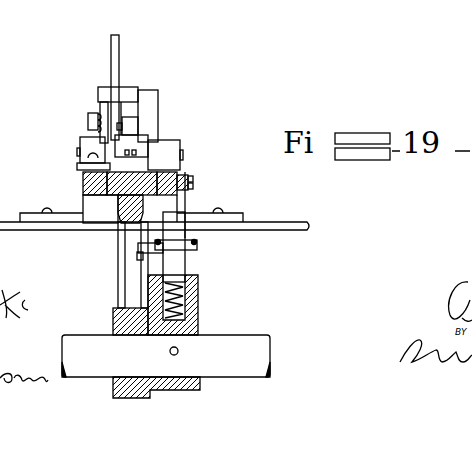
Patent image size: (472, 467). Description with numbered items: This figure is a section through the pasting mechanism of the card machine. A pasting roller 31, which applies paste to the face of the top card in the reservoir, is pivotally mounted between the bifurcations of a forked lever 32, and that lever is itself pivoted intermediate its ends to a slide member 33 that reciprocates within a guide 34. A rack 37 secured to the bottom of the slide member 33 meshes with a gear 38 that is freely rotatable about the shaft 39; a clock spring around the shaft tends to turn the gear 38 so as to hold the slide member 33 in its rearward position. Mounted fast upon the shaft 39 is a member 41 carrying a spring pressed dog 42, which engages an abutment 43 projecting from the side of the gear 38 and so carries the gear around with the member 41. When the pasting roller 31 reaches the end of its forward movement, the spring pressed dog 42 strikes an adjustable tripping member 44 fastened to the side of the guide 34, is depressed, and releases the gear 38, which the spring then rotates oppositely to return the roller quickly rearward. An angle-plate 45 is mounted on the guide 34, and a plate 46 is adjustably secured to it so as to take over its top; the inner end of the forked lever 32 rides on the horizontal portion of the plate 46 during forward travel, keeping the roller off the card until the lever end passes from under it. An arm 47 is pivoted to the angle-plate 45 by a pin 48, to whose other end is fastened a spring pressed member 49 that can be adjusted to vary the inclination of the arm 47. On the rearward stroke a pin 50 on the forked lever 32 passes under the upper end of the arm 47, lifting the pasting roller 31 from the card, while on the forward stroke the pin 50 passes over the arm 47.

The pasting roller 31 is at (150, 97).
The forked lever 32 is at (138, 126).
The slide member 33 is at (140, 163).
The guide 34 is at (80, 181).
The rack 37 is at (117, 198).
The gear 38 is at (117, 321).
The shaft 39 is at (245, 343).
The member 41 is at (183, 305).
The spring pressed dog 42 is at (177, 258).
The abutment 43 is at (137, 260).
The adjustable tripping member 44 is at (186, 181).
The angle-plate 45 is at (87, 146).
The plate 46 is at (107, 94).
The arm 47 is at (117, 53).
The pin 48 is at (91, 116).
The spring pressed member 49 is at (90, 125).
The pin 50 is at (122, 125).